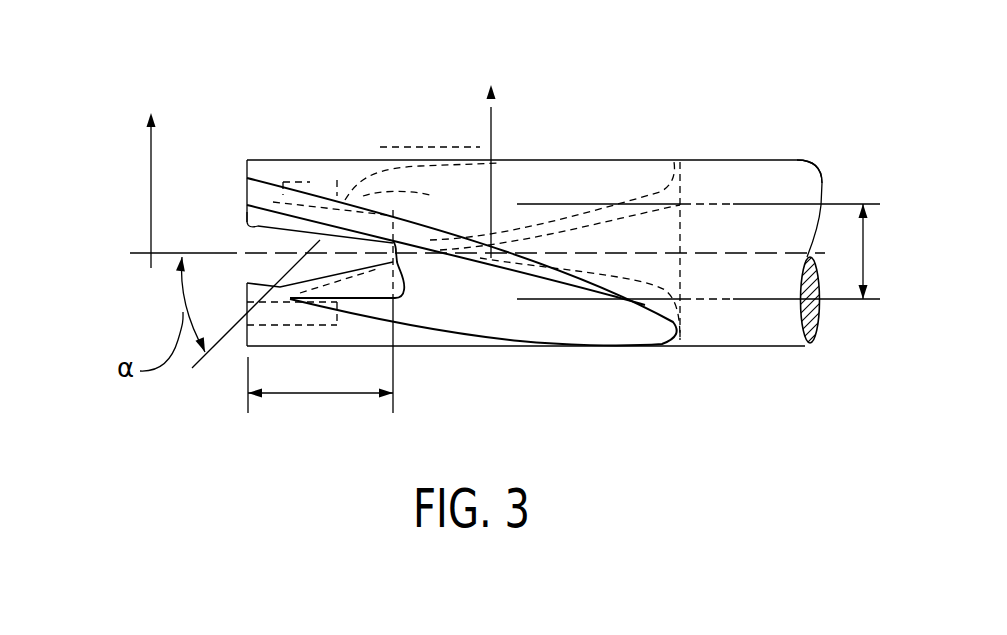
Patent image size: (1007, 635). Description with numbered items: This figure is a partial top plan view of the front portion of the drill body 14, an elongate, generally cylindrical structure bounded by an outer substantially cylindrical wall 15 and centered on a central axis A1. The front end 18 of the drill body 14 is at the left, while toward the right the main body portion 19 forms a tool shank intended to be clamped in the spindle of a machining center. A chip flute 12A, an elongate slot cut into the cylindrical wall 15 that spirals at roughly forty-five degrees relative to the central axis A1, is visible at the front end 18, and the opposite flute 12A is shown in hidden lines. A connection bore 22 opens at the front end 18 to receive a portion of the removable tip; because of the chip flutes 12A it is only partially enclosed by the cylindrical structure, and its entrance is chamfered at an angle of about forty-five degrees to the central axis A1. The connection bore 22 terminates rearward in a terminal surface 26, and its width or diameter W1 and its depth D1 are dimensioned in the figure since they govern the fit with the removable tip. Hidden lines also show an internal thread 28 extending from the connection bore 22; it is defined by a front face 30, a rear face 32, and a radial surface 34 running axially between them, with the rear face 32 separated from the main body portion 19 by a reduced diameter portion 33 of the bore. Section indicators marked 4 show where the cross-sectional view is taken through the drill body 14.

The drill body 14 is at (697, 79).
The outer substantially cylindrical wall 15 is at (769, 330).
The front end 18 is at (133, 164).
The main body portion 19 is at (790, 143).
The connection bore 22 is at (208, 217).
The terminal surface 26 is at (393, 247).
The internal thread 28 is at (297, 160).
The front face 30 is at (333, 200).
The rear face 32 is at (493, 160).
The reduced diameter portion 33 is at (463, 259).
The radial surface 34 is at (339, 200).
The chip flute 12A is at (584, 183).
The section line 4- 4 is at (321, 160).
The central axis A1 is at (146, 253).
The depth of the connection bore D1 is at (310, 393).
The width or diameter of the connection bore W1 is at (880, 257).